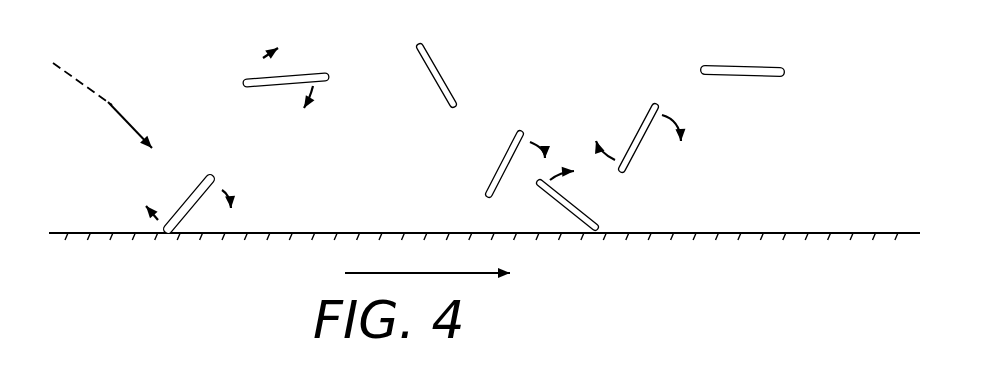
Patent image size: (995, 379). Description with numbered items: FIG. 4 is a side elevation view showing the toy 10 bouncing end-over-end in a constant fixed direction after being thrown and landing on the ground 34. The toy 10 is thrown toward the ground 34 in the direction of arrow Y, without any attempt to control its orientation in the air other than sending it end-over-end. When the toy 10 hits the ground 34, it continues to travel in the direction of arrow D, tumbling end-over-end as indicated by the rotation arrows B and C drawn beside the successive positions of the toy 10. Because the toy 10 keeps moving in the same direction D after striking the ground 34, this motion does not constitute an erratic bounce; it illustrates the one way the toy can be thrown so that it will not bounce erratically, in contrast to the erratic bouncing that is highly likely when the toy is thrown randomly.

The blank (article being conveyed) 10 is at (461, 84).
The conveyor surface 34 is at (845, 232).
The rotation direction B is at (257, 76).
The rotation direction C is at (318, 84).
The arrow Y is at (110, 113).
The arrow D is at (433, 273).